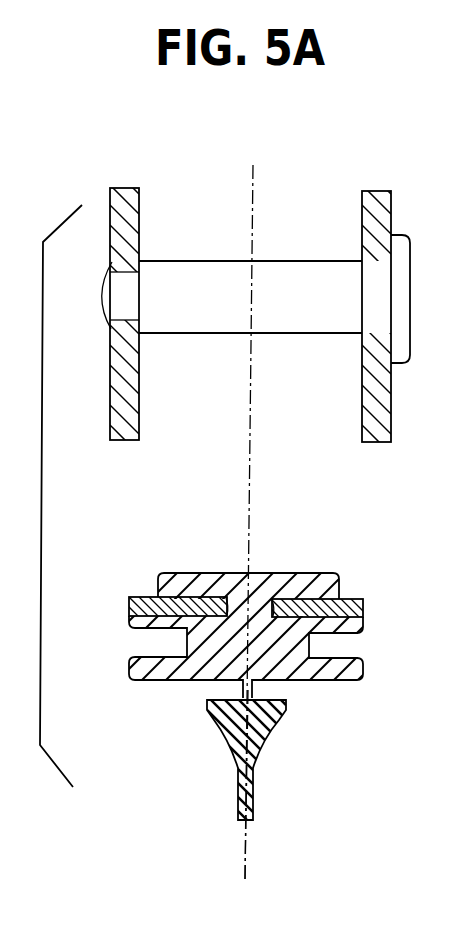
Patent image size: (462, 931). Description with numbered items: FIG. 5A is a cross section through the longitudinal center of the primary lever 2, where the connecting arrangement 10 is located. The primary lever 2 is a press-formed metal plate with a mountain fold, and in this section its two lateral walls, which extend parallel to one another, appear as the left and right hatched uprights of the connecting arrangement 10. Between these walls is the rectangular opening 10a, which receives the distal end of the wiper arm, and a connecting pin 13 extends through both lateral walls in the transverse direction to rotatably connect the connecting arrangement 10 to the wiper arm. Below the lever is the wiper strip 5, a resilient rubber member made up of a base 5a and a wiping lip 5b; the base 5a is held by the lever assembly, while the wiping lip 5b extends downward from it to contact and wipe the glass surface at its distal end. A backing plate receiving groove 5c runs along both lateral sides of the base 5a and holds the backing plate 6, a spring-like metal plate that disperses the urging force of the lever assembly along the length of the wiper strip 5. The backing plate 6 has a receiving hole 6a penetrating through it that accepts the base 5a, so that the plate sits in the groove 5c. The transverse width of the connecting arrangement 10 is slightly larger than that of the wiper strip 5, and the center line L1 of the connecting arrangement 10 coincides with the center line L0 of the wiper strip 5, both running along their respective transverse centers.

The primary lever 2 is at (278, 297).
The connecting arrangement 10 is at (392, 205).
The rectangular opening 10a is at (144, 191).
The connecting pin 13 is at (182, 269).
The wiper strip 5 is at (242, 705).
The base 5a is at (160, 575).
The wiping lip 5b is at (262, 750).
The backing plate receiving groove 5c is at (276, 599).
The backing plate 6 is at (365, 602).
The receiving hole 6a is at (230, 598).
The center line of the connecting arrangement L1 is at (252, 172).
The center line of the wiper strip L0 is at (247, 838).